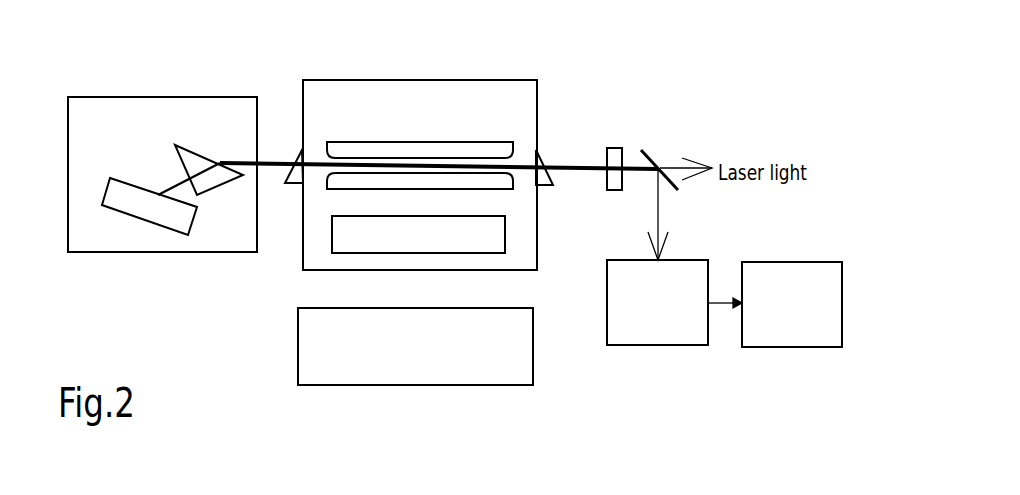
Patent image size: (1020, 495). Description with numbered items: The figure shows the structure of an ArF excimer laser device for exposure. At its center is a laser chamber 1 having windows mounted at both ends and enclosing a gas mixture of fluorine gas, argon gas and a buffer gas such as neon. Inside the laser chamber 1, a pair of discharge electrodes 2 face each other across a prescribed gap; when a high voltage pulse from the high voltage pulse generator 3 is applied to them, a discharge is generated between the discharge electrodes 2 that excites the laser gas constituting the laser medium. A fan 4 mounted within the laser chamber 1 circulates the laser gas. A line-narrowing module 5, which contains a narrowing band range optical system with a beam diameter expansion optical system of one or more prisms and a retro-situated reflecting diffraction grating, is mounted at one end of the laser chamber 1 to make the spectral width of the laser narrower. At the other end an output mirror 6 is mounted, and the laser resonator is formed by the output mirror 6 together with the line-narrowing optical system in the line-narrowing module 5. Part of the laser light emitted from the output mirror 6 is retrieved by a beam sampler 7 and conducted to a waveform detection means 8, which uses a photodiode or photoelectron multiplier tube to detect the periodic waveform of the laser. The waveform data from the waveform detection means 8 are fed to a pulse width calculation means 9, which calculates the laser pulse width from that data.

The laser chamber 1 is at (327, 80).
The discharge electrodes 2 is at (502, 180).
The high voltage pulse generator 3 is at (298, 330).
The fan 4 is at (332, 243).
The line-narrowing module 5 is at (233, 97).
The output mirror 6 is at (617, 148).
The beam sampler 7 is at (659, 150).
The waveform detection means 8 is at (700, 345).
The pulse width calculation means 9 is at (833, 347).